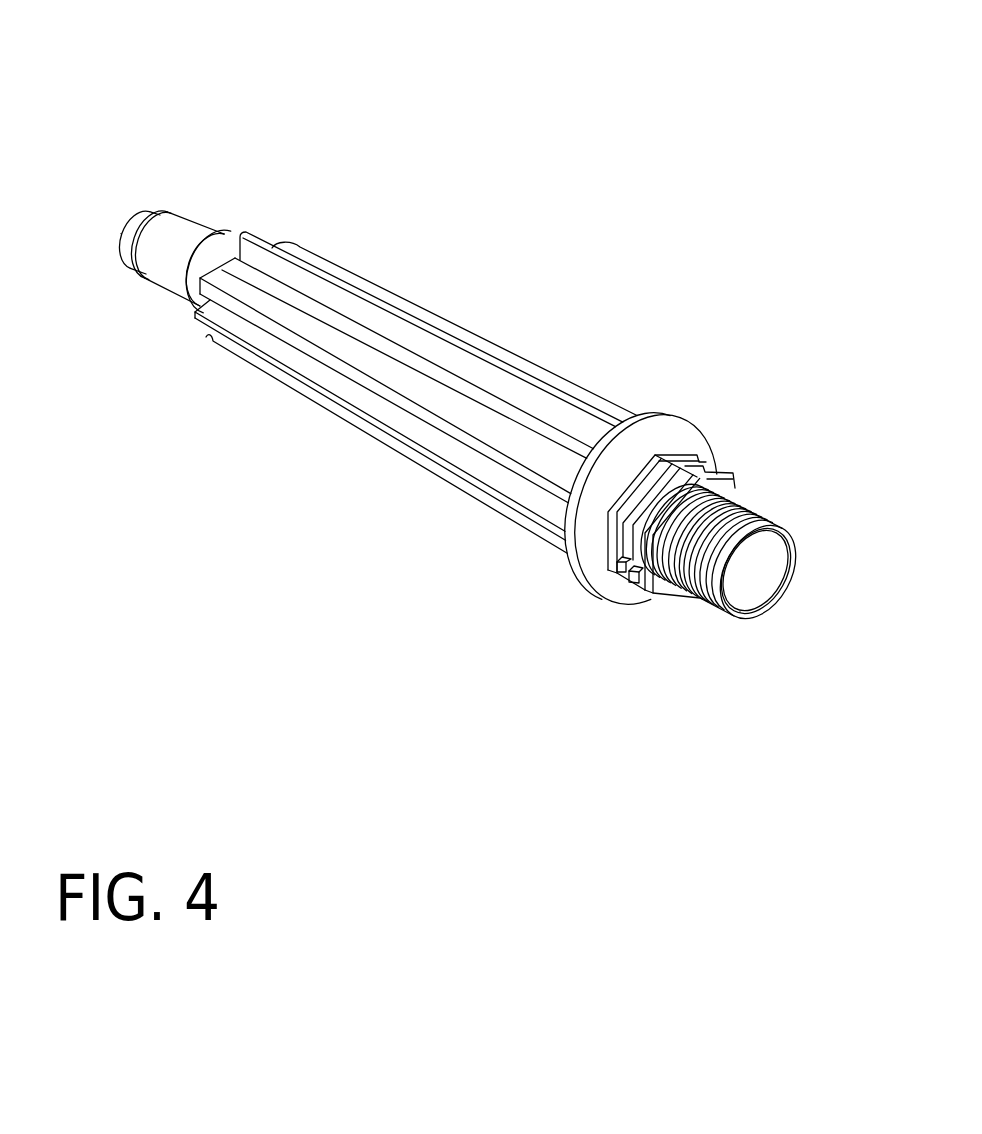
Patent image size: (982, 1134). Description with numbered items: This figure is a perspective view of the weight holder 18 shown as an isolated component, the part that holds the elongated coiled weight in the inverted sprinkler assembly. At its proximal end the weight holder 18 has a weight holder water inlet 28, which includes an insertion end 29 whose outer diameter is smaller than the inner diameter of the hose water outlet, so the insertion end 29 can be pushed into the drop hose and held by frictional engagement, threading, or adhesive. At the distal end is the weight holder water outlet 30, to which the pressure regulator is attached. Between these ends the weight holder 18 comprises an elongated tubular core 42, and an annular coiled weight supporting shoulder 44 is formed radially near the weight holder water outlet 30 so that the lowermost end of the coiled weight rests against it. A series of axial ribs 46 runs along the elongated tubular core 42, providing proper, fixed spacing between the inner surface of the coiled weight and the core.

The weight holder 18 is at (574, 130).
The weight holder water inlet 28 is at (126, 247).
The insertion end 29 is at (188, 233).
The weight holder water outlet 30 is at (743, 500).
The elongated tubular core 42 is at (412, 365).
The annular coiled weight supporting shoulder 44 is at (656, 418).
The axial ribs 46 is at (353, 422).